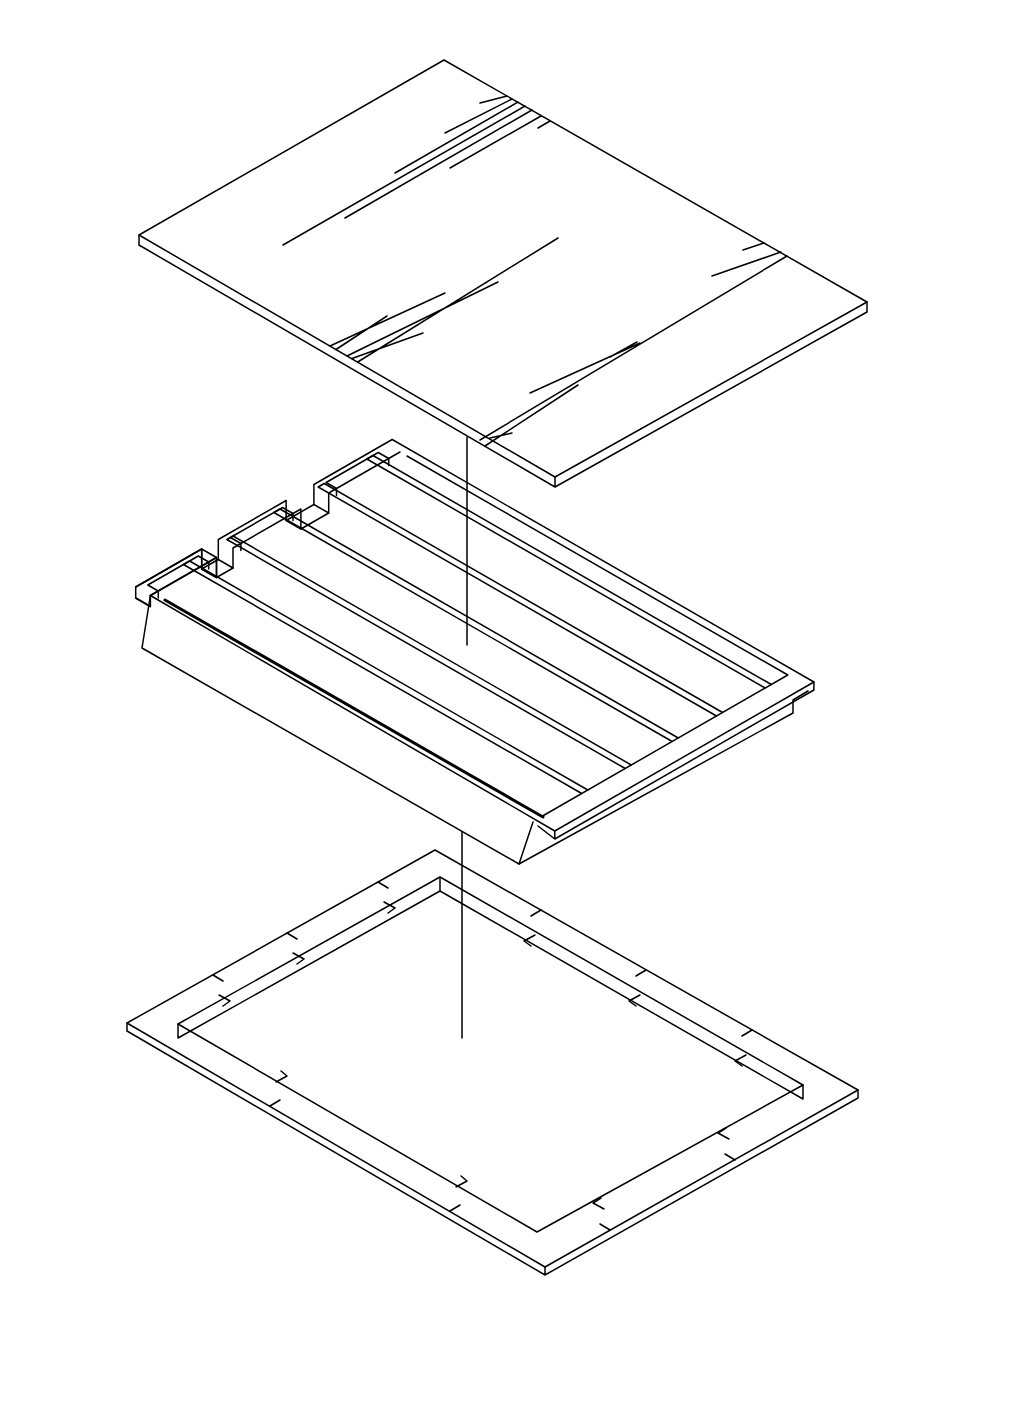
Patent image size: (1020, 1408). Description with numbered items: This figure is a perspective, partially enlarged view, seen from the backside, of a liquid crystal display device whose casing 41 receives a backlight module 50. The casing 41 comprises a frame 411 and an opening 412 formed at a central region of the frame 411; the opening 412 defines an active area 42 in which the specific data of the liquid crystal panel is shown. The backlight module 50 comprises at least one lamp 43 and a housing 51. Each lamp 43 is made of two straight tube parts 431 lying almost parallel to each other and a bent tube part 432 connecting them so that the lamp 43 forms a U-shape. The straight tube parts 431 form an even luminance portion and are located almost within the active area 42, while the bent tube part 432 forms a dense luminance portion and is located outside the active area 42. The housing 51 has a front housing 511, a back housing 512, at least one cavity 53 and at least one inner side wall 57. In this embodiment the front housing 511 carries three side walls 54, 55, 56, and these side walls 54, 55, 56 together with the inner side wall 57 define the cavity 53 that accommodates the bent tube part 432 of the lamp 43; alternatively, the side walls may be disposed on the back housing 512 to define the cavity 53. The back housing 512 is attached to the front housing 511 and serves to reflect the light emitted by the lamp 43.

The backlight module 50 is at (157, 95).
The housing 51 is at (180, 184).
The back housing 512 is at (395, 117).
The front housing 511 is at (165, 636).
The lamp 43 is at (330, 676).
The straight tube part 431 is at (287, 623).
The bent tube part 432 is at (162, 582).
The cavity 53 is at (152, 586).
The side wall 54 is at (148, 605).
The side wall 55 is at (192, 557).
The side wall 56 is at (216, 560).
The inner side wall 57 is at (188, 593).
The casing 41 is at (207, 933).
The frame 411 is at (203, 1048).
The opening 412 is at (406, 1125).
The active area 42 is at (373, 1092).